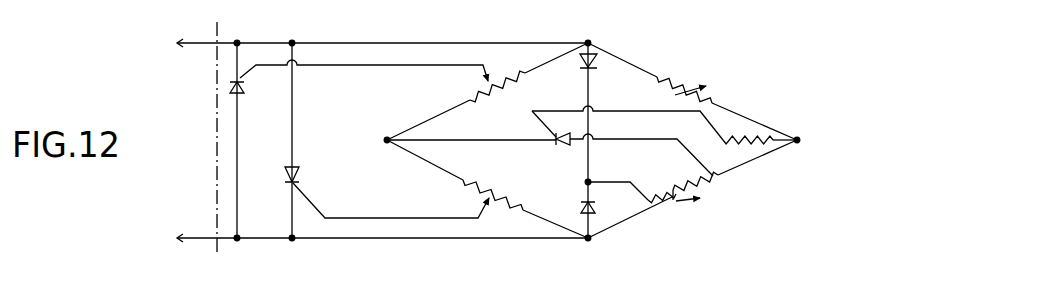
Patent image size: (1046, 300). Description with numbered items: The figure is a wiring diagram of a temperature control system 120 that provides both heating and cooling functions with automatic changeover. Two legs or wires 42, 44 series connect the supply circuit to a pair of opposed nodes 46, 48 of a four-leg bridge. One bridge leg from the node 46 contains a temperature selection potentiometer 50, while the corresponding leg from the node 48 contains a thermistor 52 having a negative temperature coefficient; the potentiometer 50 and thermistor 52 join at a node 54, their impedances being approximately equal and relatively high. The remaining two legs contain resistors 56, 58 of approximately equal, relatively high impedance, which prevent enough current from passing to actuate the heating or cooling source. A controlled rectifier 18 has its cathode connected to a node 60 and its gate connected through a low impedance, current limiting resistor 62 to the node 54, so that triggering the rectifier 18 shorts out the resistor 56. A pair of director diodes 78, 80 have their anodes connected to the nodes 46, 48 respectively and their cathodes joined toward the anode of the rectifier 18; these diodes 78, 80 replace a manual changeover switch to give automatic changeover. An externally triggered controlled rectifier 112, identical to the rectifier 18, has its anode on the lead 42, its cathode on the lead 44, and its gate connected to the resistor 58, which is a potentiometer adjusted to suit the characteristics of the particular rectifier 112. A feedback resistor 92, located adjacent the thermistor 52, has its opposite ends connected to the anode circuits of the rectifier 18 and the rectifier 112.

The controlled rectifier 18 is at (562, 147).
The leg or wire 42 is at (351, 43).
The leg or wire 44 is at (393, 238).
The node 46 is at (589, 42).
The node 48 is at (589, 242).
The temperature selection potentiometer 50 is at (690, 83).
The thermistor 52 is at (681, 204).
The node 54 is at (796, 137).
The resistor 56 is at (504, 83).
The resistor 58 is at (496, 193).
The node 60 is at (387, 148).
The current limiting resistor 62 is at (757, 145).
The director diode 78 is at (597, 64).
The director diode 80 is at (595, 208).
The feedback resistor 92 is at (681, 185).
The controlled rectifier 112 is at (244, 90).
The temperature control system 120 is at (476, 42).